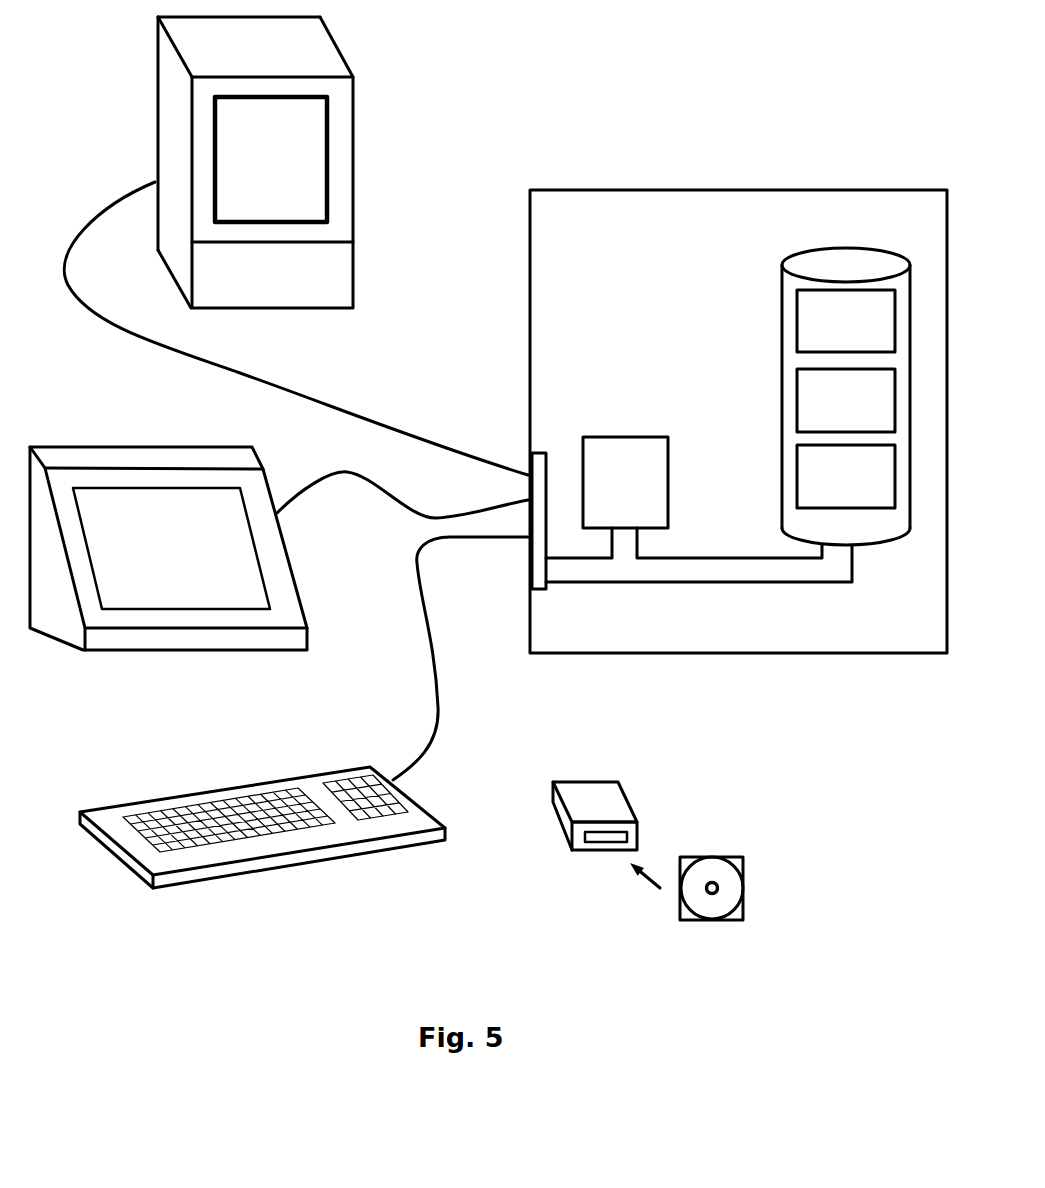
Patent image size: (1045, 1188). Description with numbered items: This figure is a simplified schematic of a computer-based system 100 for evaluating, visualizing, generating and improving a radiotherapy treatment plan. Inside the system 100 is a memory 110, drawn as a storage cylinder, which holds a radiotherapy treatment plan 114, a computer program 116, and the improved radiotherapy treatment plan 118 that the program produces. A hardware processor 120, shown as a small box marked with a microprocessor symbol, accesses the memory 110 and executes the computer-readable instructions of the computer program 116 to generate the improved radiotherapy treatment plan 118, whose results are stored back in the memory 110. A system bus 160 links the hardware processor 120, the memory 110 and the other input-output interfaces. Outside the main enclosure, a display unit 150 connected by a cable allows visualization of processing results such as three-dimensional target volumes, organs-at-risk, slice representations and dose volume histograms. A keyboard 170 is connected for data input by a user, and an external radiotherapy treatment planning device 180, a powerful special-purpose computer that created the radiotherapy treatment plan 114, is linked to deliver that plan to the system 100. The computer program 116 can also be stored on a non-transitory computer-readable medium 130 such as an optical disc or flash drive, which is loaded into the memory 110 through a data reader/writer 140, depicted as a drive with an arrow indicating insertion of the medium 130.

The computer-based system 100 is at (607, 98).
The memory 110 is at (846, 341).
The computer program 116 is at (846, 321).
The improved radiotherapy treatment plan 118 is at (846, 400).
The radiotherapy treatment plan 114 is at (846, 476).
The hardware processor 120 is at (620, 448).
The system bus 160 is at (760, 568).
The external radiotherapy treatment planning device 180 is at (340, 108).
The display unit 150 is at (162, 455).
The keyboard 170 is at (272, 847).
The data reader/writer 140 is at (562, 813).
The non-transitory computer-readable medium 130 is at (727, 877).